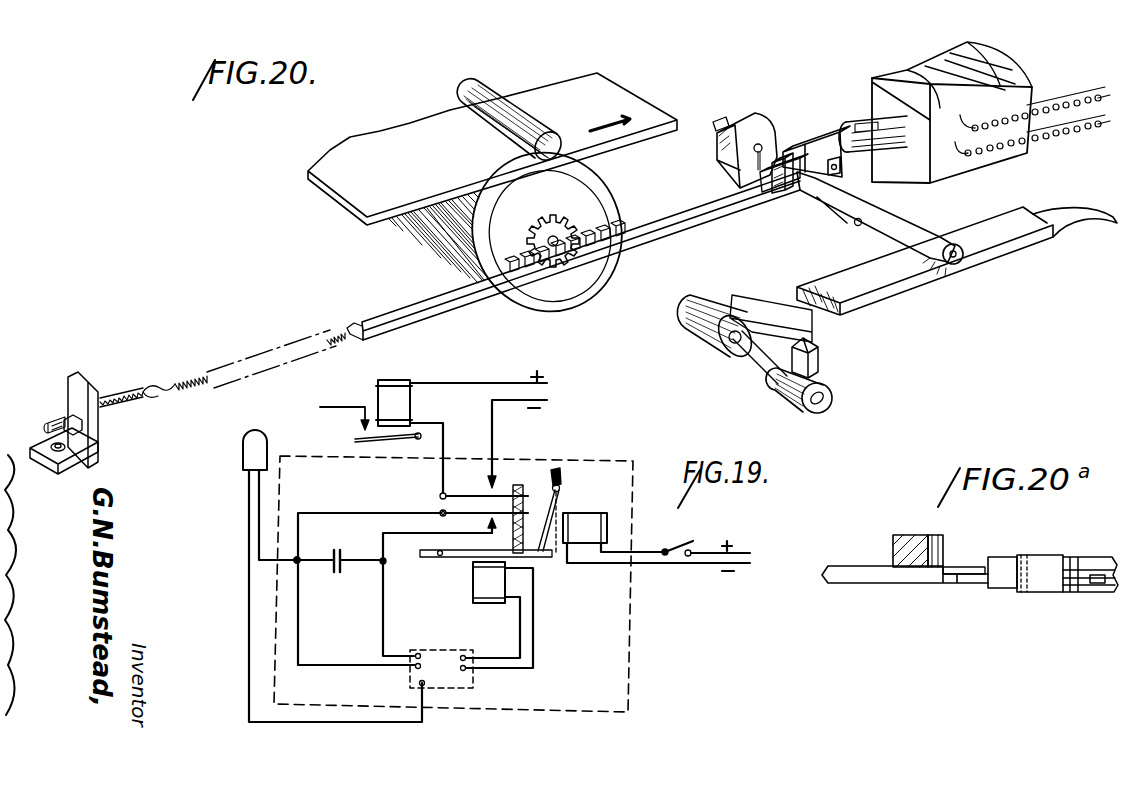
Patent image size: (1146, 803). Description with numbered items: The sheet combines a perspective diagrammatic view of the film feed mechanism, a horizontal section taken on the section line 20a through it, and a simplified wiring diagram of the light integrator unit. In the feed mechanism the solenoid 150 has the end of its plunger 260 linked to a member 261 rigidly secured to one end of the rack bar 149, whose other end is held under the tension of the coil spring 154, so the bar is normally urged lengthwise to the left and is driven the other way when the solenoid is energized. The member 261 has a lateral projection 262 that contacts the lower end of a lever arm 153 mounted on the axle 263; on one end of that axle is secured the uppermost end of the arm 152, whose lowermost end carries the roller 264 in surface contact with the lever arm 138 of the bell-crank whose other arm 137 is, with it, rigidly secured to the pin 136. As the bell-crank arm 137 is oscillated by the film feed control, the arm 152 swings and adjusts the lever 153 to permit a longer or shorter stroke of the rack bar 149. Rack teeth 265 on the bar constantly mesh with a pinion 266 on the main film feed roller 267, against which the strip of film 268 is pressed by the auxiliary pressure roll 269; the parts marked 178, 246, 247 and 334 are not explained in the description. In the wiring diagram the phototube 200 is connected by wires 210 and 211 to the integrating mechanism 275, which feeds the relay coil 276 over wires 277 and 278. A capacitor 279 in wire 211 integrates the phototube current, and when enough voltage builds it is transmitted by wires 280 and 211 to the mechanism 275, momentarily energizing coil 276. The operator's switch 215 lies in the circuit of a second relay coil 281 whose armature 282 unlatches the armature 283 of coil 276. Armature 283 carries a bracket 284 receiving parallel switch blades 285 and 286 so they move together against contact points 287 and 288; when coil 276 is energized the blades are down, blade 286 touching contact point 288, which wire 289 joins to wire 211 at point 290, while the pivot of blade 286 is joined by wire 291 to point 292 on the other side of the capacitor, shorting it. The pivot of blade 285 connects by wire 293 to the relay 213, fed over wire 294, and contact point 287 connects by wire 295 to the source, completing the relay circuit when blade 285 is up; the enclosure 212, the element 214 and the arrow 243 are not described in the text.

In FIG. 20, the section line 20a is at (701, 150).
In FIG. 20, the pin 136 is at (760, 353).
In FIG. 20, the bell-crank arm 137 is at (814, 362).
In FIG. 20, the lever arm 138 is at (830, 270).
In FIG. 20, the rack bar 149 is at (666, 243).
In FIG. 20A, the rack bar 149 is at (845, 575).
In FIG. 20, the solenoid 150 is at (987, 57).
In FIG. 20, the arm 152 is at (913, 223).
In FIG. 20, the lever arm 153 is at (740, 127).
In FIG. 20A, the lever arm 153 is at (915, 535).
In FIG. 20, the coil spring 154 is at (272, 338).
In FIG. 20, the belt 178 is at (1100, 125).
In FIG. 20, the wire loops 246 is at (1062, 107).
In FIG. 20, the wire loops 247 is at (1066, 133).
In FIG. 20, the plunger 260 is at (893, 150).
In FIG. 20A, the plunger 260 is at (1095, 590).
In FIG. 20, the member 261 is at (808, 137).
In FIG. 20A, the member 261 is at (991, 581).
In FIG. 20, the lateral projection 262 is at (765, 178).
In FIG. 20A, the lateral projection 262 is at (946, 548).
In FIG. 20, the axle 263 is at (815, 192).
In FIG. 20, the roller 264 is at (953, 237).
In FIG. 20, the rack teeth 265 is at (583, 258).
In FIG. 20, the pinion 266 is at (547, 213).
In FIG. 20, the main film feed roller 267 is at (592, 186).
In FIG. 20, the strip of film 268 is at (415, 214).
In FIG. 20, the auxiliary pressure roll 269 is at (500, 103).
In FIG. 20, the bracket 334 is at (59, 413).
In FIG. 19, the phototube 200 is at (250, 447).
In FIG. 19, the wire 210 is at (248, 503).
In FIG. 19, the wire 211 is at (258, 524).
In FIG. 19, the enclosure 212 is at (618, 627).
In FIG. 19, the relay 213 is at (394, 390).
In FIG. 19, the switch arm 214 is at (362, 440).
In FIG. 19, the operator's switch 215 is at (668, 546).
In FIG. 19, the arrow 243 is at (347, 404).
In FIG. 19, the integrating mechanism 275 is at (478, 687).
In FIG. 19, the relay coil 276 is at (474, 586).
In FIG. 19, the wire 277 is at (520, 630).
In FIG. 19, the wire 278 is at (533, 606).
In FIG. 19, the capacitor 279 is at (357, 549).
In FIG. 19, the wire 280 is at (362, 663).
In FIG. 19, the second relay coil 281 is at (582, 525).
In FIG. 19, the armature 282 is at (560, 495).
In FIG. 19, the armature 283 is at (452, 557).
In FIG. 19, the bracket 284 is at (552, 484).
In FIG. 19, the switch blade 285 is at (443, 484).
In FIG. 19, the switch blade 286 is at (440, 511).
In FIG. 19, the contact point 287 is at (496, 480).
In FIG. 19, the contact point 288 is at (490, 517).
In FIG. 19, the wire 289 is at (418, 530).
In FIG. 19, the point 290 is at (385, 563).
In FIG. 19, the wire 291 is at (354, 505).
In FIG. 19, the point 292 is at (299, 563).
In FIG. 19, the wire 293 is at (426, 422).
In FIG. 19, the wire 294 is at (476, 373).
In FIG. 19, the wire 295 is at (501, 444).